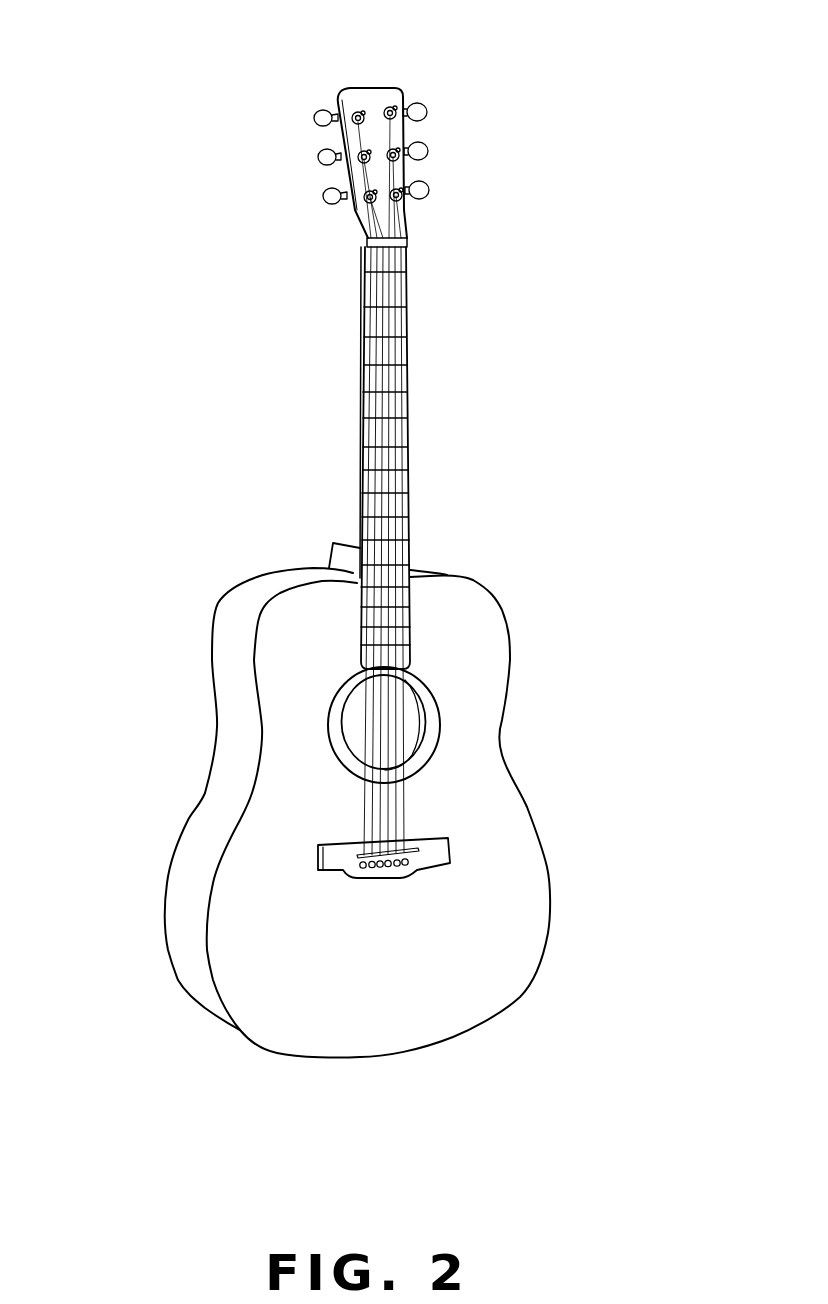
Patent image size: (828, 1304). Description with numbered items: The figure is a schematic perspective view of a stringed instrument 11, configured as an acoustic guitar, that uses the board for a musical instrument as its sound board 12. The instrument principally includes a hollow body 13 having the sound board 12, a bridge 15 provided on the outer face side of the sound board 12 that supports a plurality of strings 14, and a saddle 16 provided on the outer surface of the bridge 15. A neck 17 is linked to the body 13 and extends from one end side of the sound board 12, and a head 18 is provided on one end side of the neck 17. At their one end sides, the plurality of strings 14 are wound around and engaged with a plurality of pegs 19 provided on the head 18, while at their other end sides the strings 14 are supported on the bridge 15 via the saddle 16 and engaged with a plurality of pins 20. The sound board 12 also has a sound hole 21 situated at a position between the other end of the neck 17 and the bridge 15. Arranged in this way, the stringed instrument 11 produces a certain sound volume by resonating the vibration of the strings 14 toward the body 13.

The stringed instrument 11 is at (550, 83).
The sound board 12 is at (272, 657).
The body 13 is at (185, 563).
The strings 14 is at (368, 433).
The bridge 15 is at (437, 852).
The saddle 16 is at (420, 838).
The neck 17 is at (366, 394).
The head 18 is at (379, 88).
The pegs 19 is at (398, 163).
The pins 20 is at (440, 870).
The sound hole 21 is at (408, 712).